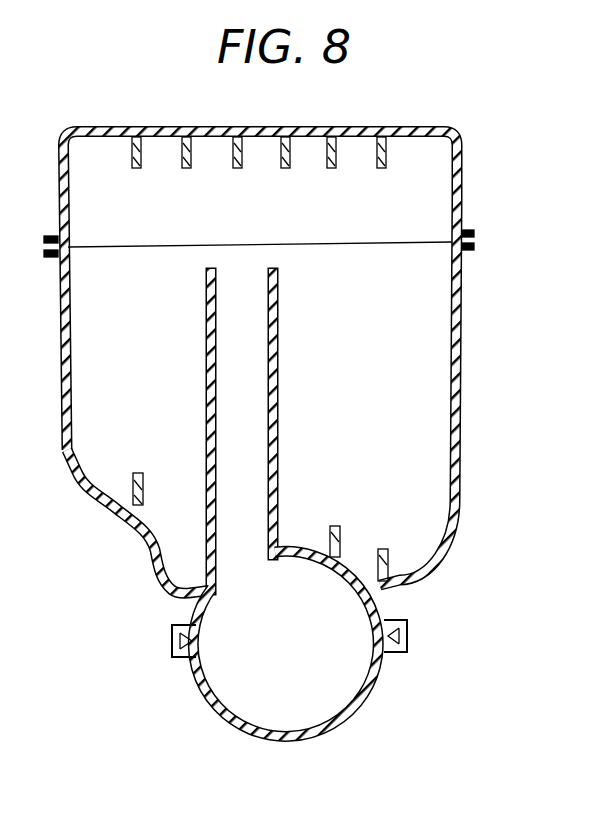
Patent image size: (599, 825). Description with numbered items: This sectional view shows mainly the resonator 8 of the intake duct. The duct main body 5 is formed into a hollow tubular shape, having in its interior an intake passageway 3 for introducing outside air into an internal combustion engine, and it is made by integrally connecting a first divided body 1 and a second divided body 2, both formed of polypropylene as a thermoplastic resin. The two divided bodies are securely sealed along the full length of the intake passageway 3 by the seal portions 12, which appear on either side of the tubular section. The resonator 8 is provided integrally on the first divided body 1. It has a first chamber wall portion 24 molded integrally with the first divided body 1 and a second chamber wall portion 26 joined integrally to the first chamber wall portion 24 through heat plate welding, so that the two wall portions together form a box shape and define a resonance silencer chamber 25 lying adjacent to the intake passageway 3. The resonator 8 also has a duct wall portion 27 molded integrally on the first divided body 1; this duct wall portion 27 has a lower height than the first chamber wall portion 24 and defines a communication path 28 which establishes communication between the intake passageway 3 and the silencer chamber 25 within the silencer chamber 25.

The resonator 8 is at (498, 160).
The second chamber wall portion 26 is at (465, 197).
The resonance silencer chamber 25 is at (430, 326).
The first chamber wall portion 24 is at (462, 366).
The duct wall portion 27 is at (280, 430).
The communication path 28 is at (228, 353).
The first divided body 1 is at (382, 598).
The seal portion 12 is at (156, 636).
The duct main body 5 is at (412, 680).
The second divided body 2 is at (370, 693).
The intake passageway 3 is at (324, 698).